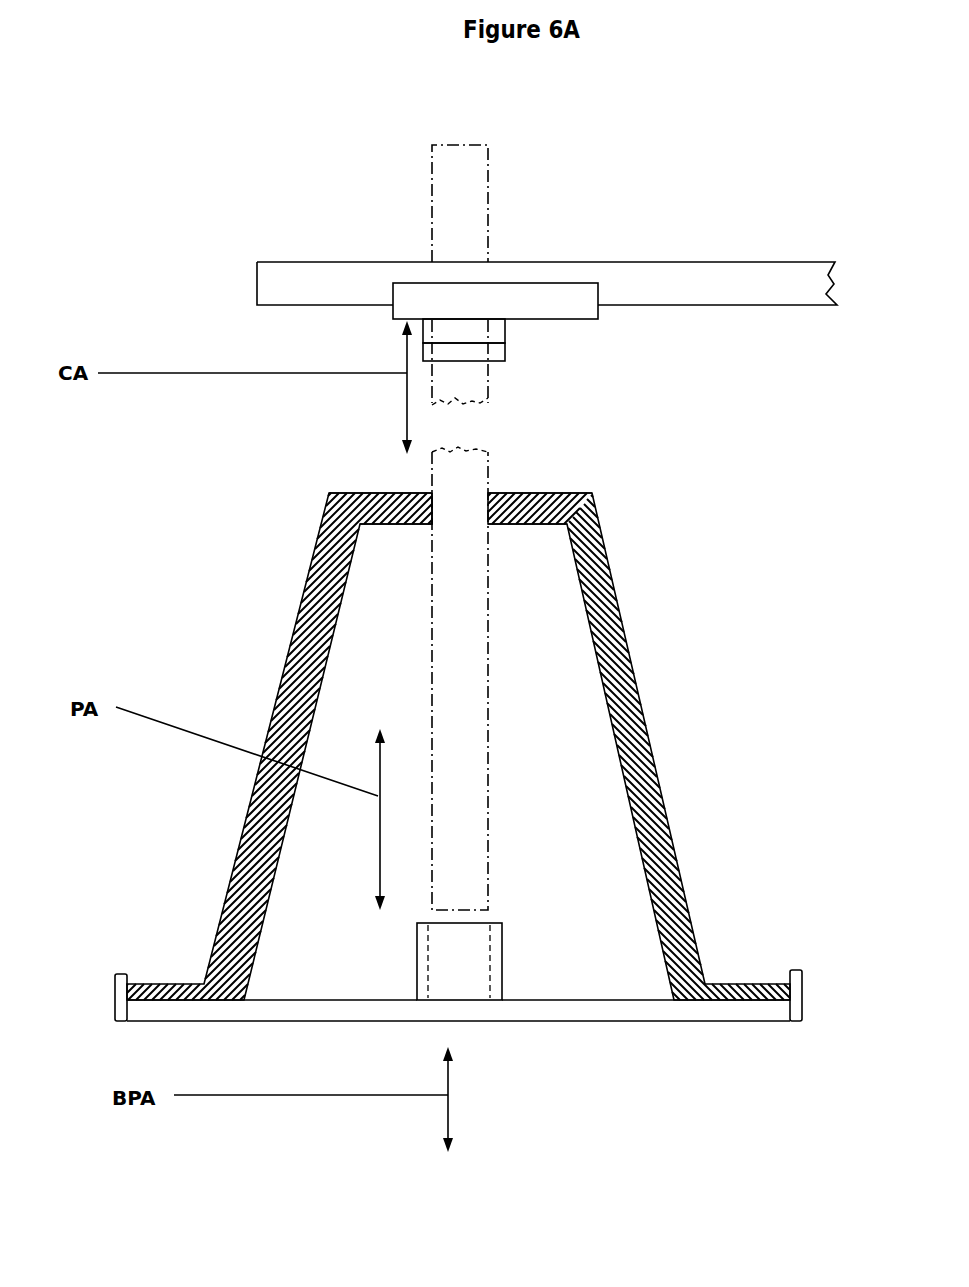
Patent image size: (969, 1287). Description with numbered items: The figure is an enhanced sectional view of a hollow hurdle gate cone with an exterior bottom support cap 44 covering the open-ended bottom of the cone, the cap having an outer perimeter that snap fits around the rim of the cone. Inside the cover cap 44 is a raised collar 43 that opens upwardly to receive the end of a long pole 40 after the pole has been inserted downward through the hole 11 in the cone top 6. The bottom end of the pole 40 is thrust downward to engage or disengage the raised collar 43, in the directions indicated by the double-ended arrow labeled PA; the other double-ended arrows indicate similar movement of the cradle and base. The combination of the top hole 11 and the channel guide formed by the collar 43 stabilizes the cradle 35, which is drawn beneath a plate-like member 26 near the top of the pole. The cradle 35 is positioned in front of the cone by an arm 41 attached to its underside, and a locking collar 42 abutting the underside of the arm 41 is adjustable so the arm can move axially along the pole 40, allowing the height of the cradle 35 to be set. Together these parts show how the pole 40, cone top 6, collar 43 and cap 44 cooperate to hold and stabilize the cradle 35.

The long pole 40 is at (432, 220).
The plate 26 is at (287, 273).
The cradle 35 is at (433, 306).
The arm 41 is at (473, 330).
The locking collar 42 is at (452, 353).
The cone top 6 is at (522, 493).
The hole 11 is at (432, 493).
The raised collar 43 is at (473, 971).
The bottom support cap 44 is at (560, 1018).